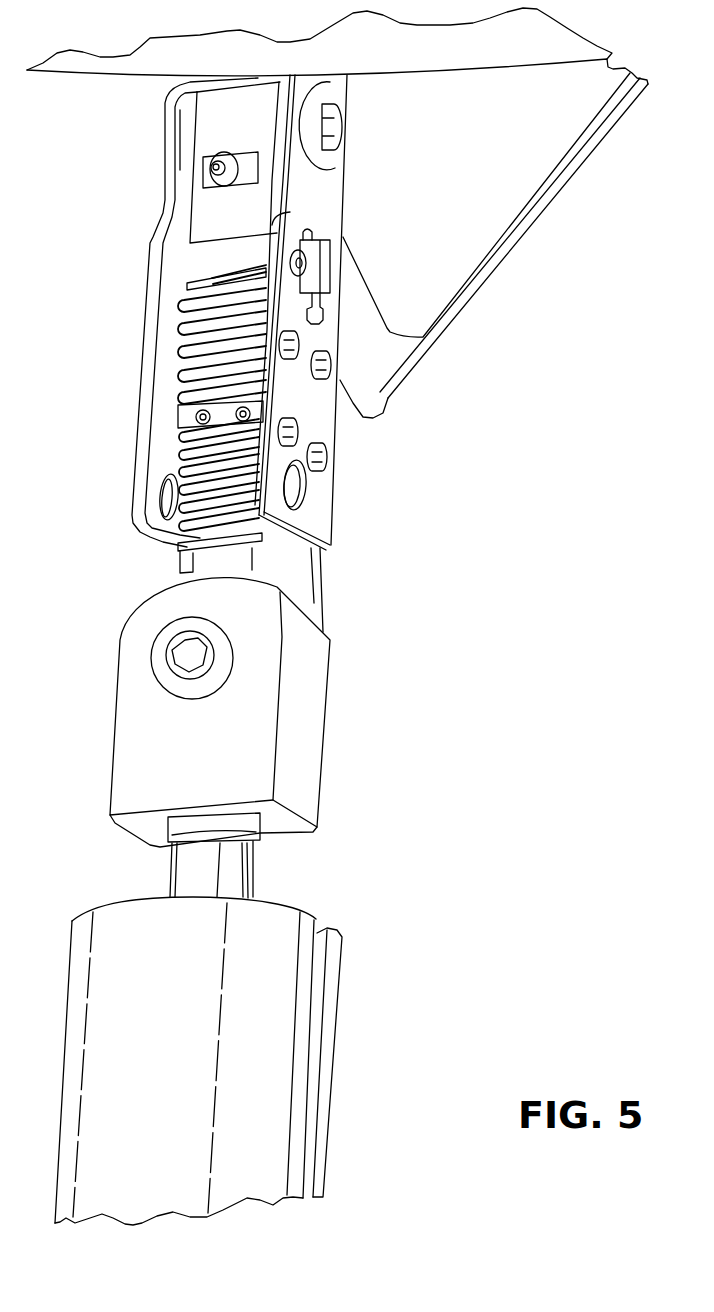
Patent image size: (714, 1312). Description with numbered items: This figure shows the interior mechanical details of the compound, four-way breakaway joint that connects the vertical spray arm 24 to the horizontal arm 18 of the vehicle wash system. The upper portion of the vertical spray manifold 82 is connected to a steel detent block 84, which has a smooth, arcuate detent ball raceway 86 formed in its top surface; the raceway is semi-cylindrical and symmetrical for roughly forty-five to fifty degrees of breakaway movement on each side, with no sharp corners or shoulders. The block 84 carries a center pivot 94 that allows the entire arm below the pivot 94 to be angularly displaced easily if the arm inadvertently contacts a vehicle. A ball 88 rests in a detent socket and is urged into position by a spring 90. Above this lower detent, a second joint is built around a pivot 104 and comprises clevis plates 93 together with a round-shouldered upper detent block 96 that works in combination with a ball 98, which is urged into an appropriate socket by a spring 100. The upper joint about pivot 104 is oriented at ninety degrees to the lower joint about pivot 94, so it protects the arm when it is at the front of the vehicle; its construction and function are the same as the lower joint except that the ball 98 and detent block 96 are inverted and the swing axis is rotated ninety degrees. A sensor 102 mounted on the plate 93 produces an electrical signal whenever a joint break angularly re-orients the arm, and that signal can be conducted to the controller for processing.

The horizontal left arm 18 is at (557, 200).
The spray arm 24 is at (337, 990).
The vertical spray manifold 82 is at (236, 890).
The detent block 84 is at (313, 683).
The detent ball raceway 86 is at (293, 602).
The ball 88 is at (180, 566).
The spring 90 is at (180, 457).
The clevis plates 93 is at (327, 495).
The center pivot 94 is at (160, 683).
The upper detent block 96 is at (187, 192).
The ball 98 is at (230, 282).
The spring 100 is at (182, 337).
The sensor 102 is at (322, 247).
The pivot 104 is at (350, 133).